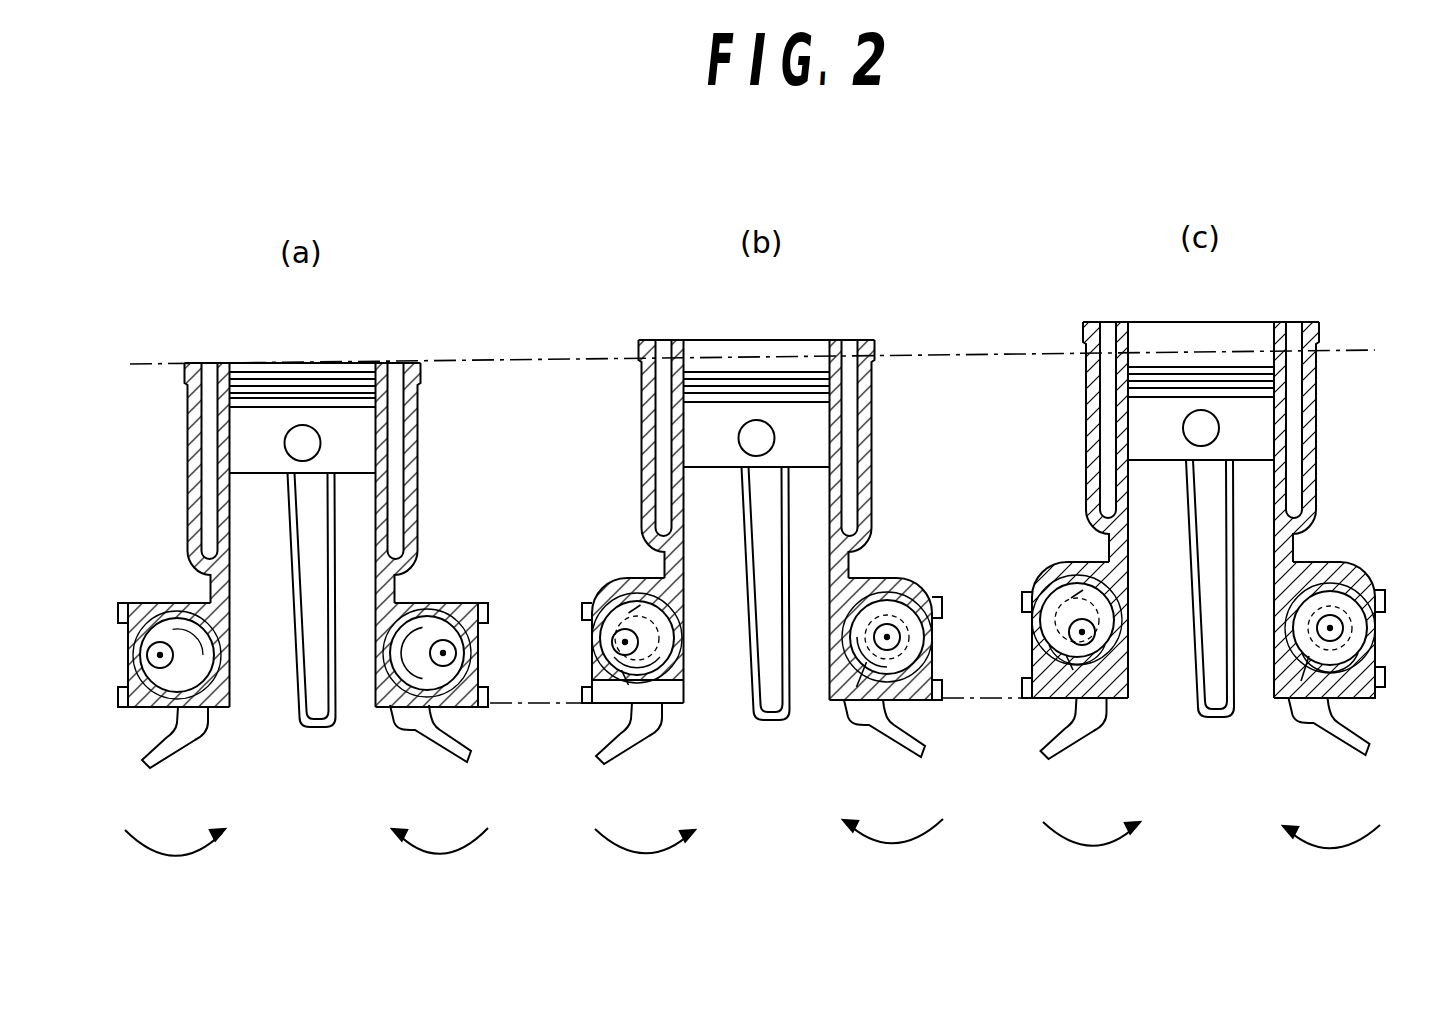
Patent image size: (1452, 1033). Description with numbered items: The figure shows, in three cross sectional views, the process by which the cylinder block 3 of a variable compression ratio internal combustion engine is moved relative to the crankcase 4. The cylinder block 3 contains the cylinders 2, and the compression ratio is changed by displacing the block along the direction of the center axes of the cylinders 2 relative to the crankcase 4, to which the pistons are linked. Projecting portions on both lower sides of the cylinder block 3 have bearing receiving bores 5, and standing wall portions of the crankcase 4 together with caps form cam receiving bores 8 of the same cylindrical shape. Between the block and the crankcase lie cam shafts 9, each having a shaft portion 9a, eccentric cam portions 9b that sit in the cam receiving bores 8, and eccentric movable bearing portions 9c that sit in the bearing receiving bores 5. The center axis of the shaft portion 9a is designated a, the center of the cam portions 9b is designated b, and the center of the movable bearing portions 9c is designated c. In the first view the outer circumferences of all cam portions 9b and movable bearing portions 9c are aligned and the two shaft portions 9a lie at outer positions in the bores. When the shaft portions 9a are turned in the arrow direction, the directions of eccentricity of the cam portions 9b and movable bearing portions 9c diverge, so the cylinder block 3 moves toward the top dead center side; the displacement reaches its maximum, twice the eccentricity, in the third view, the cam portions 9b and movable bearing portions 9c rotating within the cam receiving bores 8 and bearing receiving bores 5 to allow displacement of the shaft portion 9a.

The cylinder 2 is at (353, 557).
The cylinder block 3 is at (413, 463).
The crankcase 4 is at (402, 723).
The bearing receiving bore 5 is at (182, 697).
The cam receiving bore 8 is at (653, 690).
The cam shaft 9 is at (396, 677).
The shaft portion 9a is at (450, 673).
The cam portion 9b is at (420, 630).
The movable bearing portion 9c is at (900, 697).
The center axis of the shaft portion a is at (160, 650).
The center of the cam portions b is at (160, 650).
The center of the movable bearing portions c is at (625, 683).